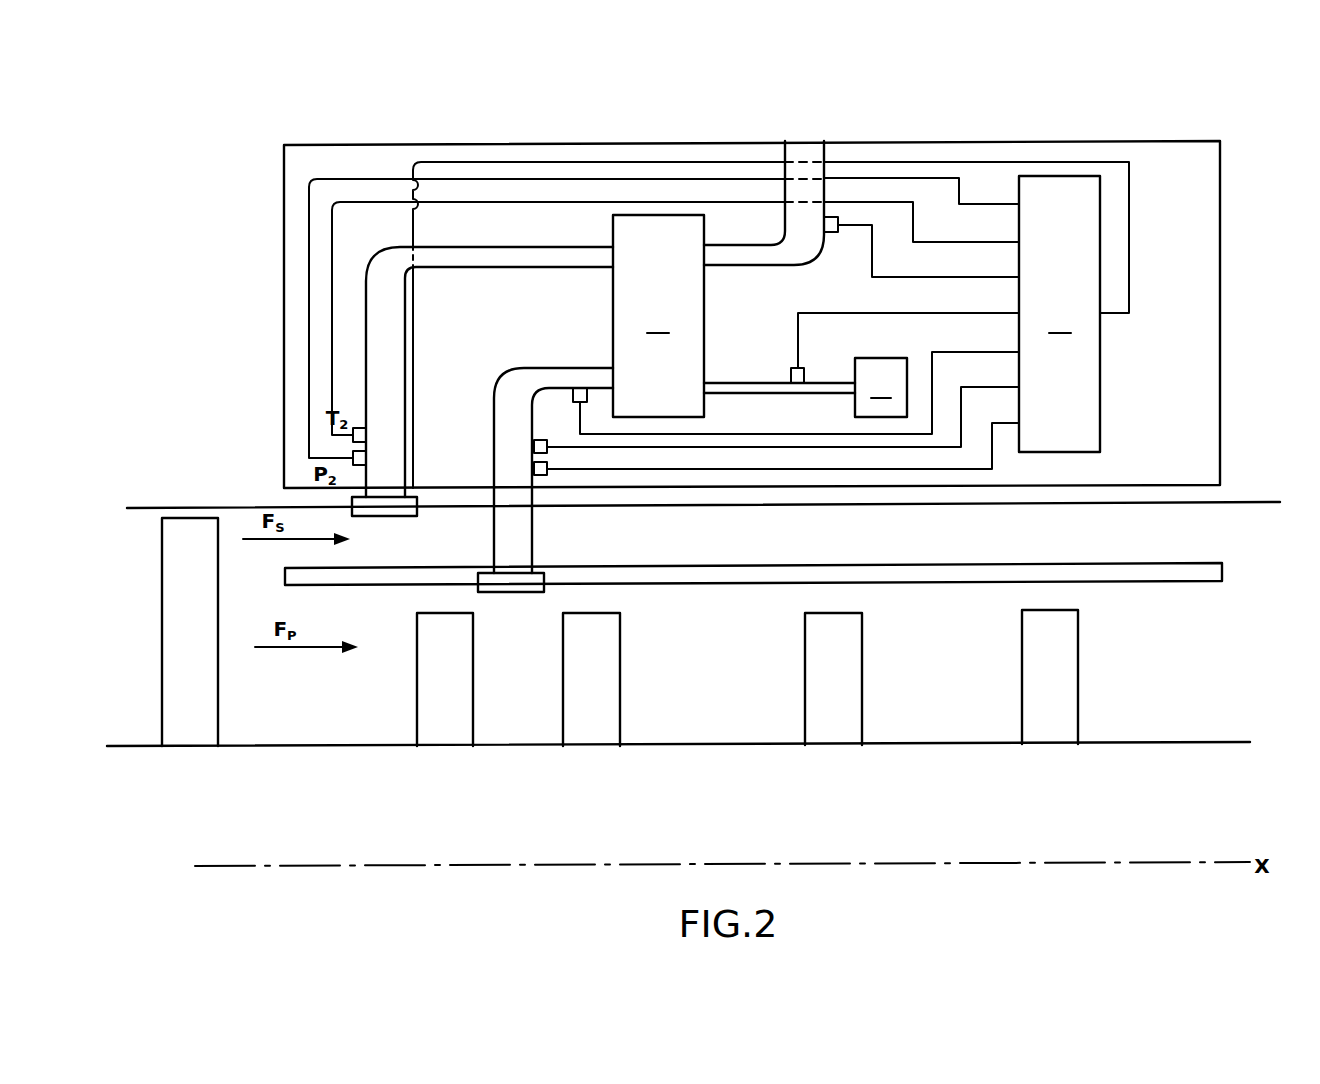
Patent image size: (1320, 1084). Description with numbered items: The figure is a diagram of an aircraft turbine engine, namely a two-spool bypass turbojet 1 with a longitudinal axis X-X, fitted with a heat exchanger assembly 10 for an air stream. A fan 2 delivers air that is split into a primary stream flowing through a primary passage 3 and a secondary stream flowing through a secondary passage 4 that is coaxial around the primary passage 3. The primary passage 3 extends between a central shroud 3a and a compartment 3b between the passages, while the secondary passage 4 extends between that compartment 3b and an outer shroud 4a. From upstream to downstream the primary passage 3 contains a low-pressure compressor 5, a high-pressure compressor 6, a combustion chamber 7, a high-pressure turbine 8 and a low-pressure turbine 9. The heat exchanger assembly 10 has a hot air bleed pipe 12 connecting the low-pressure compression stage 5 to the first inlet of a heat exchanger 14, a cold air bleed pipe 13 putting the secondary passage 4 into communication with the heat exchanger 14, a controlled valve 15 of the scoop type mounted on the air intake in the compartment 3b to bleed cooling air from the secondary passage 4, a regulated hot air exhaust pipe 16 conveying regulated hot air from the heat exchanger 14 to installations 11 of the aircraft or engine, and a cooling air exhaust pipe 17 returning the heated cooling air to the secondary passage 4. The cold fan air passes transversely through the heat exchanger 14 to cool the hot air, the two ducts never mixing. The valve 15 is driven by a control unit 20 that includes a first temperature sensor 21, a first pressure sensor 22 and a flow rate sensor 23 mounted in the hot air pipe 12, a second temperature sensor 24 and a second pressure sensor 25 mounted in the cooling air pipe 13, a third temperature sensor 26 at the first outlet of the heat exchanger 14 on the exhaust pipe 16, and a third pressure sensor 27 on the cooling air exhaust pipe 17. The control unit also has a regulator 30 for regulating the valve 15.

The turbojet 1 is at (152, 120).
The fan 2 is at (180, 645).
The primary passage 3 is at (1140, 633).
The central shroud 3a is at (1240, 740).
The compartment between the passages 3b is at (1222, 572).
The secondary passage 4 is at (1206, 532).
The outer shroud 4a is at (1268, 500).
The low-pressure compressor 5 is at (437, 697).
The high-pressure compressor 6 is at (582, 697).
The combustion chamber 7 is at (706, 686).
The high-pressure turbine 8 is at (825, 697).
The low-pressure turbine 9 is at (1042, 693).
The heat exchanger assembly 10 is at (1200, 168).
The installations 11 is at (881, 387).
The hot air bleed pipe 12 is at (532, 532).
The cold air bleed pipe 13 is at (383, 255).
The heat exchanger 14 is at (658, 316).
The controlled valve 15 is at (394, 516).
The regulated hot air exhaust pipe 16 is at (833, 395).
The cooling air exhaust pipe 17 is at (790, 268).
The control unit 20 is at (1146, 272).
The first temperature sensor 21 is at (534, 446).
The first pressure sensor 22 is at (534, 470).
The flow rate sensor 23 is at (580, 388).
The second temperature sensor 24 is at (366, 437).
The second pressure sensor 25 is at (366, 458).
The third temperature sensor 26 is at (797, 385).
The third pressure sensor 27 is at (845, 222).
The regulator 30 is at (1078, 314).